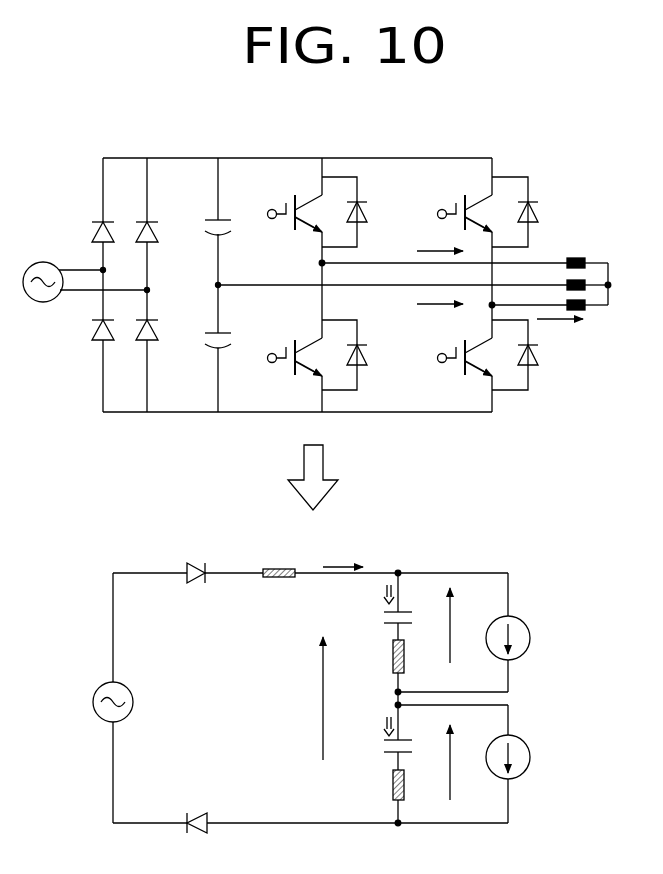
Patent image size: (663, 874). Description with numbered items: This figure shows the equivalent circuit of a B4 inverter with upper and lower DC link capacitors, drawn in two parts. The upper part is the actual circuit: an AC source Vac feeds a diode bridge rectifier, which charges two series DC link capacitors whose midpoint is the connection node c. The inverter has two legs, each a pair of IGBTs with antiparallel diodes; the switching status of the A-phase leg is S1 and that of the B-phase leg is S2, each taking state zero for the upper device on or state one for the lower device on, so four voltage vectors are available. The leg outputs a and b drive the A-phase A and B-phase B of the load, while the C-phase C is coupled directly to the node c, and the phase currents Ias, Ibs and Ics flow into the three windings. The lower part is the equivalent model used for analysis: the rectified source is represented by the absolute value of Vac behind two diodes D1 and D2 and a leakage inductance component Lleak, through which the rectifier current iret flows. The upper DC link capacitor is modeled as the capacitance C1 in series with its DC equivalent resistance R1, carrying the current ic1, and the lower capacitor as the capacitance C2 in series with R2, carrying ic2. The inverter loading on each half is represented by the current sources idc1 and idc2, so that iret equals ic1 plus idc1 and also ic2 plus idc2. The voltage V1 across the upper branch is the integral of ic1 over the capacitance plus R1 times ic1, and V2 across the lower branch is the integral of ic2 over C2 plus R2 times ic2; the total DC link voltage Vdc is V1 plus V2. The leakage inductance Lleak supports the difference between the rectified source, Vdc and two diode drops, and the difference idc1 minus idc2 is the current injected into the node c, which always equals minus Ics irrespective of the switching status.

The AC input voltage Vac is at (86, 265).
The switching status of A-phase leg S1 is at (318, 271).
The switching status of B-phase leg S2 is at (488, 271).
The output node a is at (435, 263).
The output node b is at (521, 305).
The connection node c is at (386, 285).
The A-phase A is at (587, 253).
The B-phase B is at (587, 315).
The C-phase C is at (597, 284).
The A-phase current Ias is at (422, 249).
The C-phase current Ics is at (422, 303).
The B-phase current Ibs is at (560, 334).
The first diode D1 is at (188, 559).
The second diode D2 is at (310, 801).
The leakage inductance component Lleak is at (328, 560).
The rectifier current iret is at (343, 554).
The capacitance of upper DC link capacitor C1 is at (383, 625).
The DC equivalent resistance of upper DC link capacitor R1 is at (380, 672).
The capacitance of lower DC link capacitor C2 is at (383, 754).
The DC equivalent resistance of lower DC link capacitor R2 is at (380, 796).
The upper capacitor current ic1 is at (407, 598).
The lower capacitor current ic2 is at (407, 729).
The DC link voltage Vdc is at (308, 698).
The upper DC link capacitor voltage V1 is at (466, 625).
The lower DC link capacitor voltage V2 is at (466, 762).
The upper DC current idc1 is at (523, 632).
The lower DC current idc2 is at (523, 764).